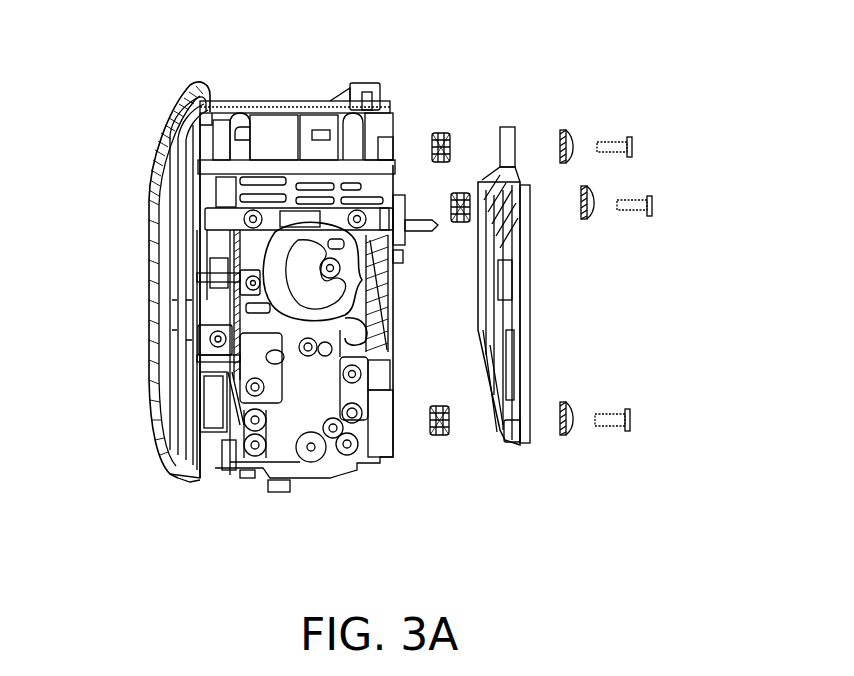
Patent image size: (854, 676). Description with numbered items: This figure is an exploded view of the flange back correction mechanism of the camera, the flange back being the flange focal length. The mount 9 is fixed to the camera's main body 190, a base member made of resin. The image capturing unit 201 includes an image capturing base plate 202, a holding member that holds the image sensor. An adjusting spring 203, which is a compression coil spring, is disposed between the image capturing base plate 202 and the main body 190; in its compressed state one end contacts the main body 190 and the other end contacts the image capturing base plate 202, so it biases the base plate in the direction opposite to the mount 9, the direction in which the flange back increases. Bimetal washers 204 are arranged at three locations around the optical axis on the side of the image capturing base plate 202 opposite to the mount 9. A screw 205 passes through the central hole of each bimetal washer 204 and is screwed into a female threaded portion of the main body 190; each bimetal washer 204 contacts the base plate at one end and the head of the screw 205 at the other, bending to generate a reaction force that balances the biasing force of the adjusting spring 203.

The mount 9 is at (166, 458).
The main body 190 is at (289, 104).
The image capturing unit 201 is at (500, 126).
The image capturing base plate 202 is at (520, 445).
The adjusting spring 203 is at (461, 192).
The bimetal washers 204 is at (565, 164).
The screw 205 is at (633, 417).